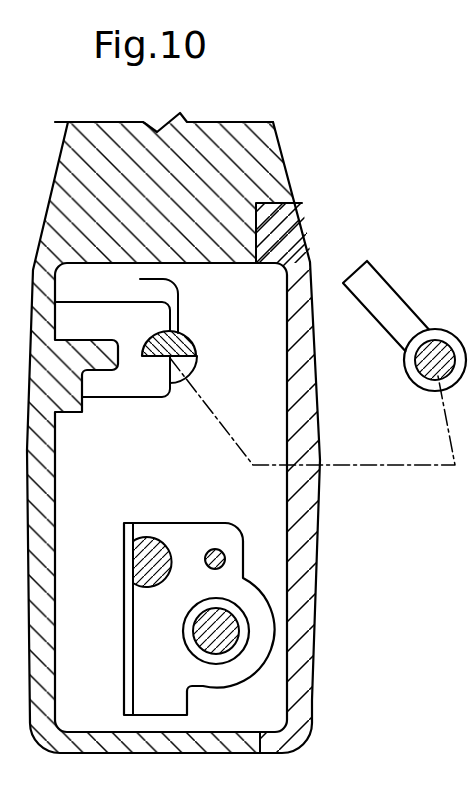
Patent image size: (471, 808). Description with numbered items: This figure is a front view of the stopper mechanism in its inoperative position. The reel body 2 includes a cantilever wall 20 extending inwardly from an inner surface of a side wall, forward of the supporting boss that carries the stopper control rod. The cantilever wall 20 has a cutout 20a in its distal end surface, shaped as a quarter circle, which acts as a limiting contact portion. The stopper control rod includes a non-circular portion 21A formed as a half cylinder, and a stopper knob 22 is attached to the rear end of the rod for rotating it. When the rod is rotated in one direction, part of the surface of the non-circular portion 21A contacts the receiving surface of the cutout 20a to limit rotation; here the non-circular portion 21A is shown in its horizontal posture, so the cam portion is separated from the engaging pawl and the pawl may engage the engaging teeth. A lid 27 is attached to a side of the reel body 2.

The reel body 2 is at (279, 158).
The cantilever wall 20 is at (133, 400).
The cutout 20a is at (140, 279).
The non-circular portion 21A is at (186, 341).
The stopper knob 22 is at (382, 278).
The lid 27 is at (313, 658).